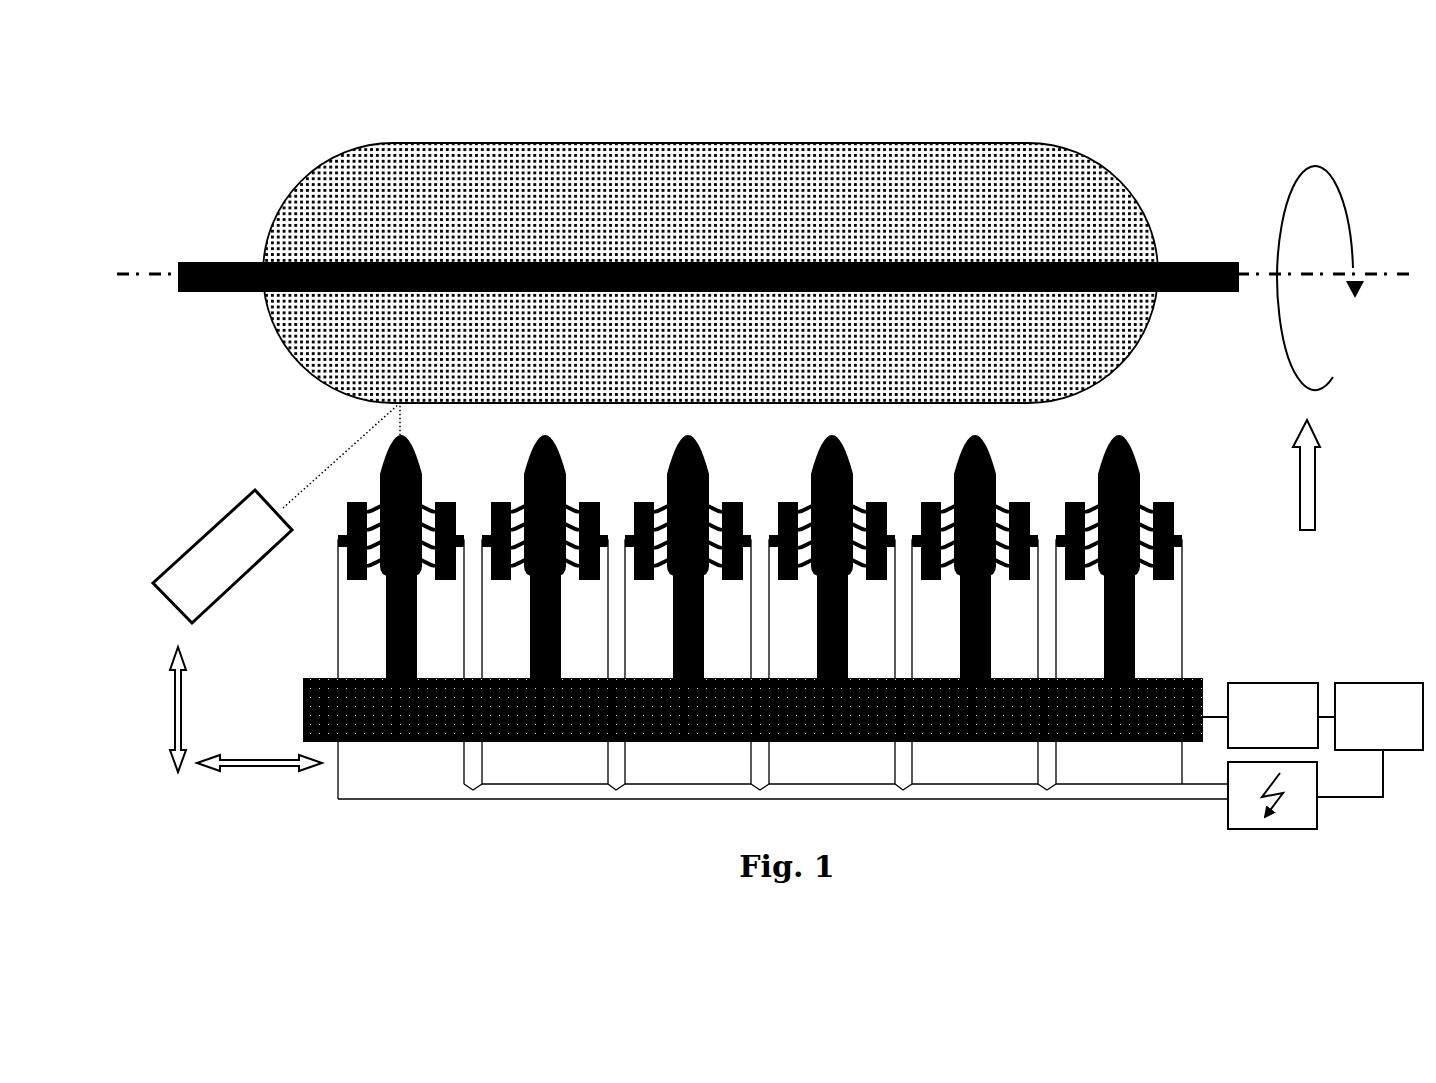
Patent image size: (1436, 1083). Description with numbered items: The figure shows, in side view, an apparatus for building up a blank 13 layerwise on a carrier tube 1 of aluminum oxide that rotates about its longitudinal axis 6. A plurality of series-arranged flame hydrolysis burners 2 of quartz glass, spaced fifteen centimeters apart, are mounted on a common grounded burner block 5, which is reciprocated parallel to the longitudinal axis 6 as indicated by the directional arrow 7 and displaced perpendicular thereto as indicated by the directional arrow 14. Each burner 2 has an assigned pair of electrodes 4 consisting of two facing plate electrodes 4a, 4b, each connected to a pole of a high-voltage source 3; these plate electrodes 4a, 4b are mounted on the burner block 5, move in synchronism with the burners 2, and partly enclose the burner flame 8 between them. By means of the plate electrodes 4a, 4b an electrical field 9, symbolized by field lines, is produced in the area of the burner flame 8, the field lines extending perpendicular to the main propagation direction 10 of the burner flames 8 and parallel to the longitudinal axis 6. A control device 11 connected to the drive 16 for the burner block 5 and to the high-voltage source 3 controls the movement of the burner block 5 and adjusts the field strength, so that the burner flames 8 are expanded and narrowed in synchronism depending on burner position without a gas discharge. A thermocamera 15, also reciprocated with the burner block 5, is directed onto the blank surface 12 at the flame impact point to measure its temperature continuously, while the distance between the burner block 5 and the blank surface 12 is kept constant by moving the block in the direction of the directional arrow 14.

The carrier tube 1 is at (1190, 265).
The flame hydrolysis burners 2 is at (385, 608).
The high-voltage source 3 is at (1305, 815).
The pair of electrodes 4 is at (1138, 555).
The plate electrode 4a is at (1068, 505).
The plate electrode 4b is at (1173, 520).
The burner block 5 is at (567, 742).
The longitudinal axis 6 is at (1400, 282).
The directional arrow 7 is at (245, 763).
The burner flame 8 is at (410, 470).
The electrical field 9 is at (700, 487).
The main propagation direction 10 is at (1343, 475).
The control device 11 is at (1375, 700).
The blank surface 12 is at (748, 135).
The blank 13 is at (923, 200).
The directional arrow 14 is at (172, 705).
The thermocamera 15 is at (228, 547).
The drive 16 is at (1260, 700).